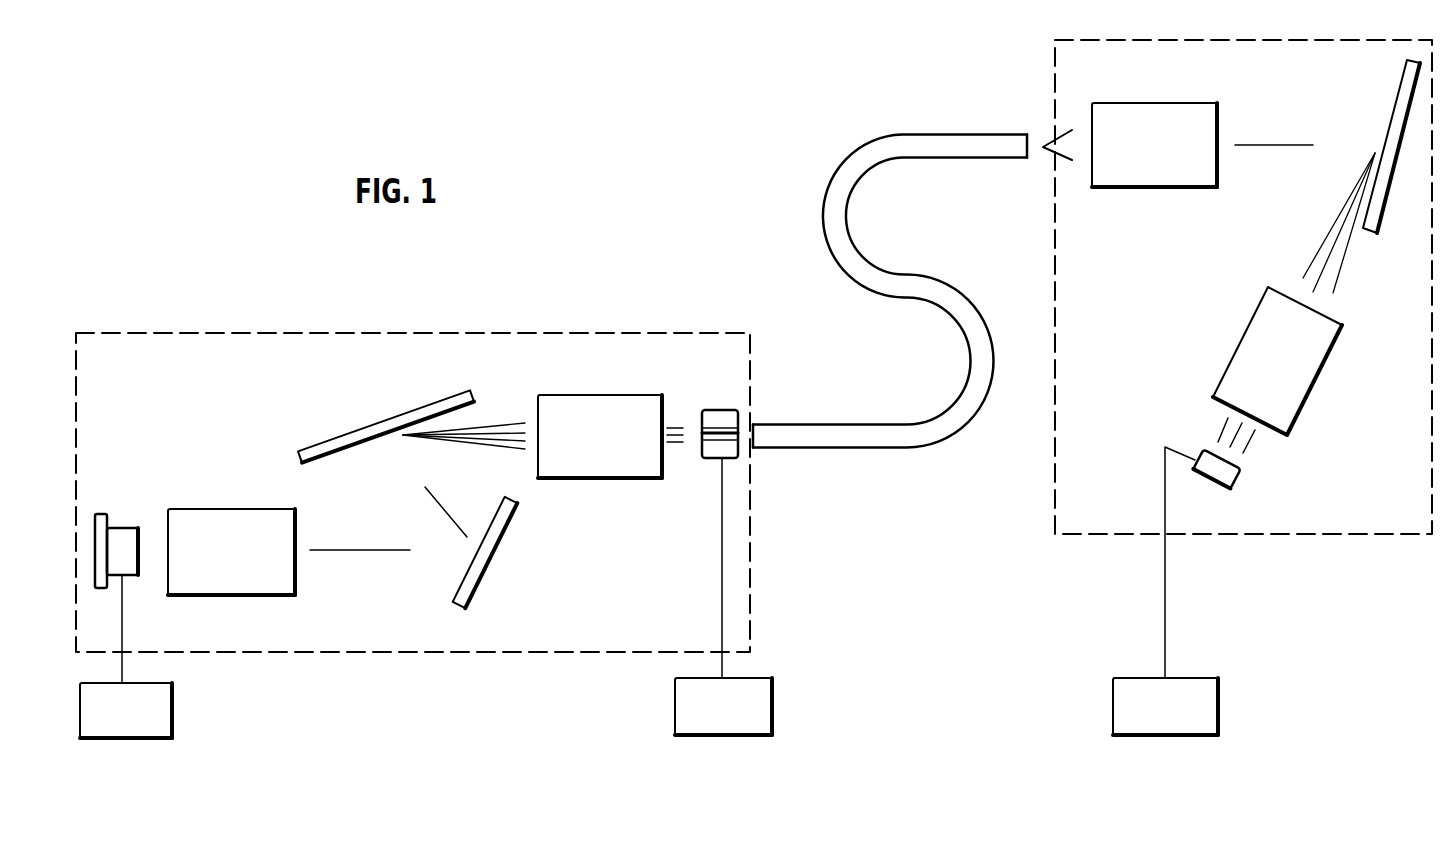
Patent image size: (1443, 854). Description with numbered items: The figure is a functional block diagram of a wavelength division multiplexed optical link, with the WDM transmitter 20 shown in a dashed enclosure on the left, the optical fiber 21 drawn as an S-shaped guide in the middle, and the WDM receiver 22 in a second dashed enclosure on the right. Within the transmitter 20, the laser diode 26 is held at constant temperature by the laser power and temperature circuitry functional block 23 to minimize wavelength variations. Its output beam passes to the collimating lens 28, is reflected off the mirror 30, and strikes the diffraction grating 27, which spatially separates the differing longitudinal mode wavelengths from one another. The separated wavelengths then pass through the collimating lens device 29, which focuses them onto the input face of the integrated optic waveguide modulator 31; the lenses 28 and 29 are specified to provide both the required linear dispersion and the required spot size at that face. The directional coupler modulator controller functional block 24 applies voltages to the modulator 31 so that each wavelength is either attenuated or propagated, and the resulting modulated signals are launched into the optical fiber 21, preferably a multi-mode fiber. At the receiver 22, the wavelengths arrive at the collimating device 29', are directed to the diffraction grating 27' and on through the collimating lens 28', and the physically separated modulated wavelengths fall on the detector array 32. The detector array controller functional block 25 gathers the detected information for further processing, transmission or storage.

The WDM transmitter 20 is at (743, 538).
The optical fiber 21 is at (963, 417).
The WDM receiver 22 is at (1337, 513).
The laser power and temperature circuitry functional block 23 is at (163, 716).
The directional coupler modulator controller functional block 24 is at (758, 720).
The detector array controller functional block 25 is at (1207, 713).
The laser diode 26 is at (121, 531).
The diffraction grating 27 is at (411, 424).
The collimating lens 28 is at (289, 568).
The collimating lens device 29 is at (610, 452).
The mirror 30 is at (482, 568).
The integrated optic waveguide modulator 31 is at (720, 413).
The detector array 32 is at (1237, 477).
The collimating device 29' is at (1202, 127).
The diffraction grating 27' is at (1361, 176).
The collimating lens 28' is at (1260, 370).